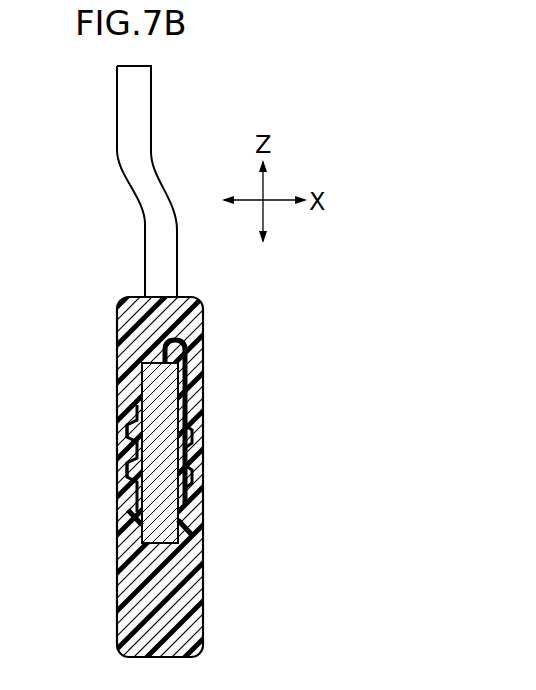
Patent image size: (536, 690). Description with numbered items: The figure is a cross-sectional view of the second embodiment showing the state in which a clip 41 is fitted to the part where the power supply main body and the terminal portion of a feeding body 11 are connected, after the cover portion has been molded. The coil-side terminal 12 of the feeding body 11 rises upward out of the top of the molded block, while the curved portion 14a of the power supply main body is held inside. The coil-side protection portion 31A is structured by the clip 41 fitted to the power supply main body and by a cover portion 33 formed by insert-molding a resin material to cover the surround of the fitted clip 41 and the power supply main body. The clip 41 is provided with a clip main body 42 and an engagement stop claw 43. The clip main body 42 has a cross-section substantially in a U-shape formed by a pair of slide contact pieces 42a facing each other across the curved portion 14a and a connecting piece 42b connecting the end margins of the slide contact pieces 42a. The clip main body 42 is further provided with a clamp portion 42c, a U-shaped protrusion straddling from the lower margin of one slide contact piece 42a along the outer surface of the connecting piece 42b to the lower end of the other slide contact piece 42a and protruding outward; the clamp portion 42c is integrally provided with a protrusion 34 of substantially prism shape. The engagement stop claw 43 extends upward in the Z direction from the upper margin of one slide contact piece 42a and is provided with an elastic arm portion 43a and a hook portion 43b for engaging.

The feeding body 11 is at (108, 137).
The coil-side terminal 12 is at (138, 93).
The curved portion 14a is at (165, 448).
The coil-side protection portion 31A is at (206, 299).
The cover portion 33 is at (130, 300).
The protrusion 34 is at (204, 622).
The clip 41 is at (214, 588).
The clip main body 42 is at (131, 419).
The slide contact piece 42a is at (128, 445).
The connecting piece 42b is at (160, 548).
The clamp portion 42c is at (132, 522).
The engagement stop claw 43 is at (195, 345).
The elastic arm portion 43a is at (190, 405).
The hook portion 43b is at (171, 360).